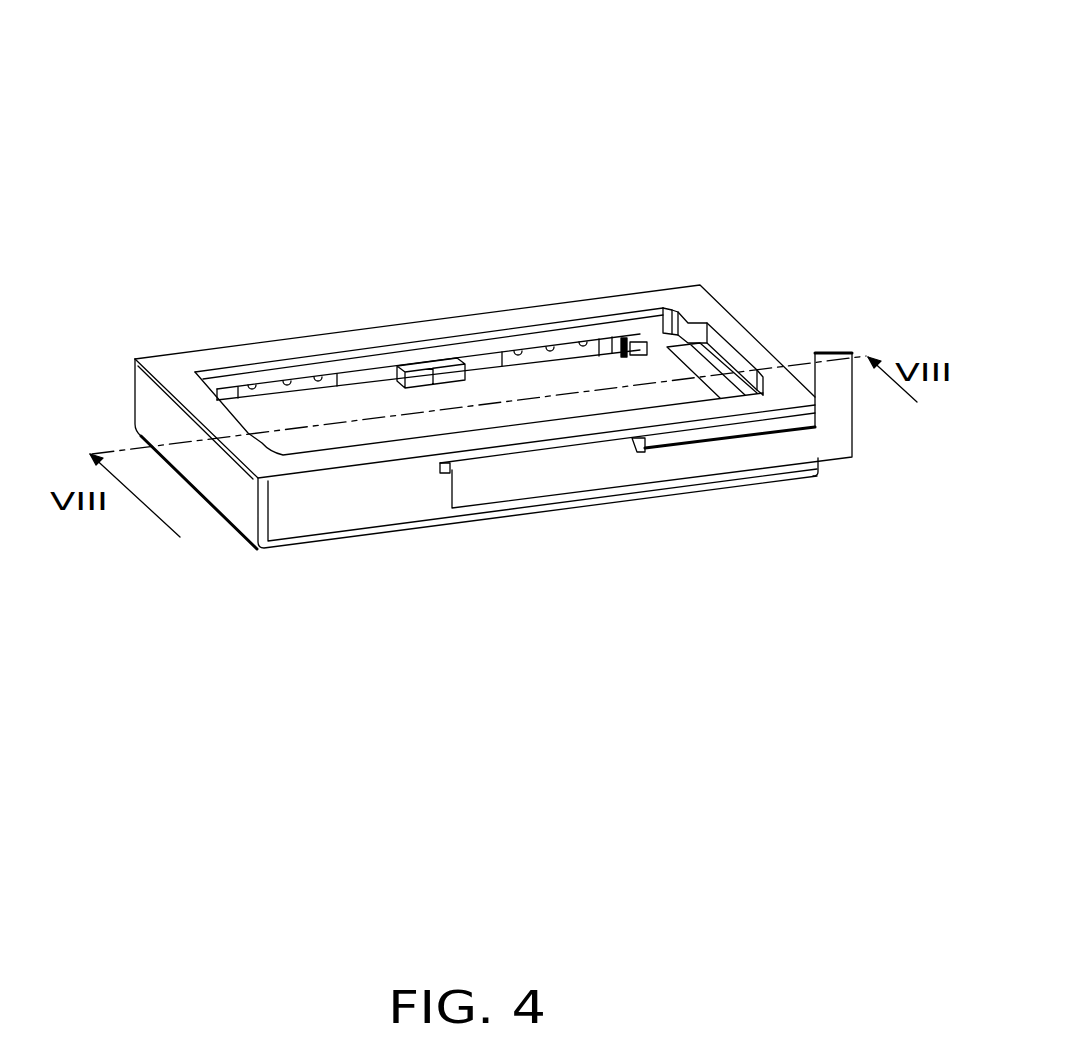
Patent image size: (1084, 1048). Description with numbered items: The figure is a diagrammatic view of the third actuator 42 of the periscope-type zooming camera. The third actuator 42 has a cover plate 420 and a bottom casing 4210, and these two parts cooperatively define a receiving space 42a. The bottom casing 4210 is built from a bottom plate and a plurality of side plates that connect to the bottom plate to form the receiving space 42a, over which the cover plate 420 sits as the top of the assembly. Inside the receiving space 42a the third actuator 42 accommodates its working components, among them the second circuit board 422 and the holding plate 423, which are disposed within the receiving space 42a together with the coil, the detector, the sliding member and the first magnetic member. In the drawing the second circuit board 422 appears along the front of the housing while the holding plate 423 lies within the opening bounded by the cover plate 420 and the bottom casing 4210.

The third actuator 42 is at (530, 43).
The cover plate 420 is at (357, 338).
The bottom casing 4210 is at (153, 417).
The second circuit board 422 is at (532, 482).
The holding plate 423 is at (517, 390).
The receiving space 42a is at (615, 349).